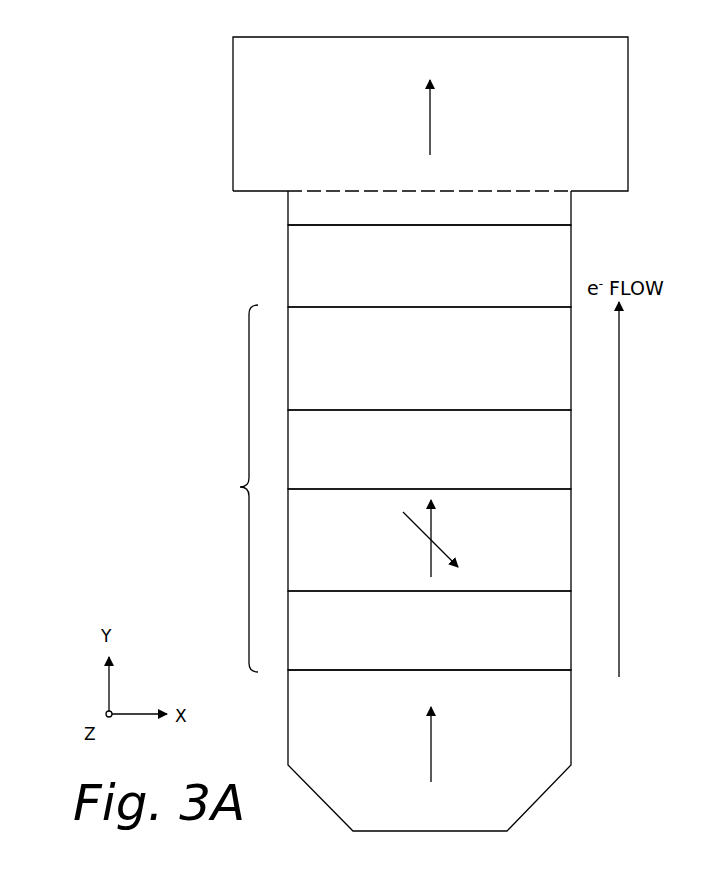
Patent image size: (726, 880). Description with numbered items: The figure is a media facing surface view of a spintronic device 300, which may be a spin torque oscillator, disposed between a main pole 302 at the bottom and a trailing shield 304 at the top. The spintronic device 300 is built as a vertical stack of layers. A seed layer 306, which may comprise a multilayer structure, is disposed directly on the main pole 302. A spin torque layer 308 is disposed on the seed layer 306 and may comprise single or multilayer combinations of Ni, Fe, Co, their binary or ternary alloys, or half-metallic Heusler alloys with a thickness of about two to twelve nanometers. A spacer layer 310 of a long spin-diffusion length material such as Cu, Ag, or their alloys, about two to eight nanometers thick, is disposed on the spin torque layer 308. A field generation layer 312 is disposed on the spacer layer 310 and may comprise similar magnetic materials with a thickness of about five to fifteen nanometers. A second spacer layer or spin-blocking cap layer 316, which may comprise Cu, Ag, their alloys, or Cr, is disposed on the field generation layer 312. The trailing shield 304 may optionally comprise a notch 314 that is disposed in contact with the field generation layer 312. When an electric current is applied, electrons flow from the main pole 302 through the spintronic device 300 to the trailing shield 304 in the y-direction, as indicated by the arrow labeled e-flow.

The spintronic device 300 is at (227, 488).
The main pole 302 is at (429, 750).
The trailing shield 304 is at (430, 114).
The seed layer 306 is at (429, 630).
The spin torque layer 308 is at (429, 540).
The spacer layer 310 is at (429, 449).
The field generation layer 312 is at (429, 358).
The notch 314 is at (429, 208).
The spin-blocking cap layer 316 is at (429, 266).